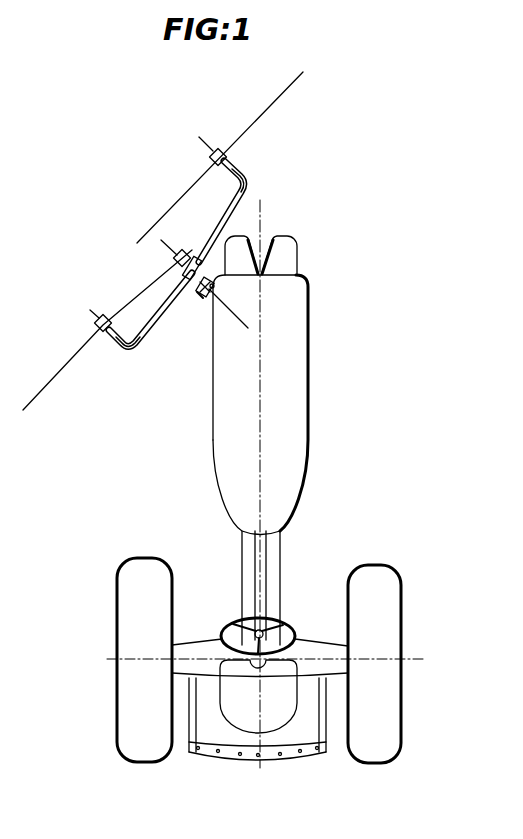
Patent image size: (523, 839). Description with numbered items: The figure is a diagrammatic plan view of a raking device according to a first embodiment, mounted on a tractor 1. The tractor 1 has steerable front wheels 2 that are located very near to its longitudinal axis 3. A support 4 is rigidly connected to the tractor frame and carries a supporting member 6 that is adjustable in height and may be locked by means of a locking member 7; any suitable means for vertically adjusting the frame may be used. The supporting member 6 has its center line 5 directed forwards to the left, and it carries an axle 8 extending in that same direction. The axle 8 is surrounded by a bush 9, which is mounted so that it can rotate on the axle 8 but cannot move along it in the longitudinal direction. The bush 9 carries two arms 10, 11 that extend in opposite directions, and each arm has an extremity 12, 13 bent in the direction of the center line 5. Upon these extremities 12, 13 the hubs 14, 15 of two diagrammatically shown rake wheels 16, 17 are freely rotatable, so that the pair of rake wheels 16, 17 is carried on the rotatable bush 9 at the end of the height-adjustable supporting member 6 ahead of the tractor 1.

The tractor 1 is at (211, 521).
The steerable front wheels 2 is at (280, 243).
The longitudinal axis 3 is at (262, 358).
The support 4 is at (214, 300).
The center line 5 is at (219, 289).
The supporting member 6 is at (198, 289).
The locking member 7 is at (203, 297).
The axle 8 is at (175, 258).
The bush 9 is at (200, 267).
The arm 10 is at (238, 193).
The arm 11 is at (154, 318).
The extremity 12 is at (240, 169).
The extremity 13 is at (116, 347).
The hub 14 is at (211, 157).
The hub 15 is at (96, 322).
The rake wheel 16 is at (150, 228).
The rake wheel 17 is at (41, 392).